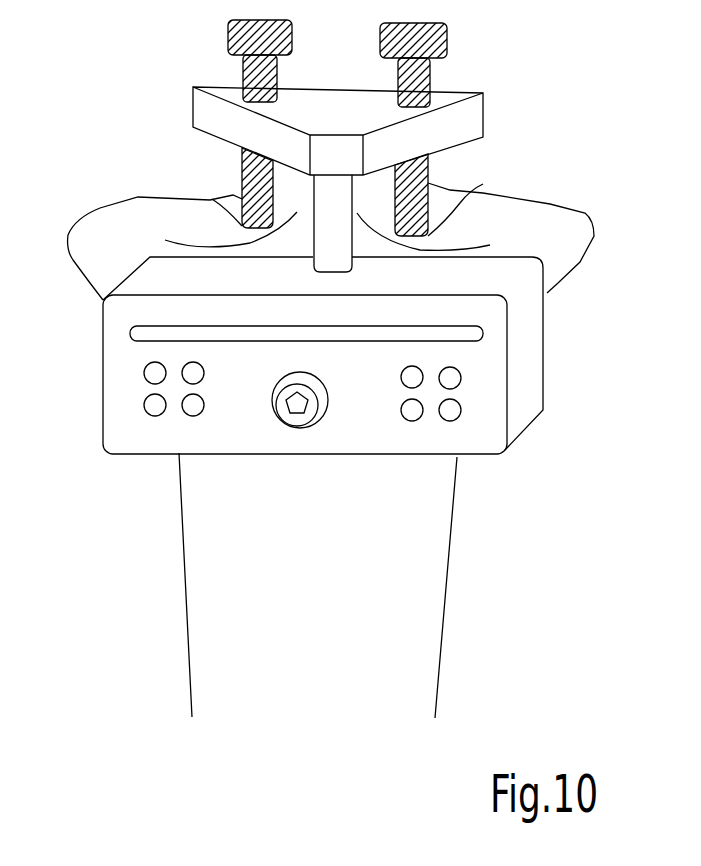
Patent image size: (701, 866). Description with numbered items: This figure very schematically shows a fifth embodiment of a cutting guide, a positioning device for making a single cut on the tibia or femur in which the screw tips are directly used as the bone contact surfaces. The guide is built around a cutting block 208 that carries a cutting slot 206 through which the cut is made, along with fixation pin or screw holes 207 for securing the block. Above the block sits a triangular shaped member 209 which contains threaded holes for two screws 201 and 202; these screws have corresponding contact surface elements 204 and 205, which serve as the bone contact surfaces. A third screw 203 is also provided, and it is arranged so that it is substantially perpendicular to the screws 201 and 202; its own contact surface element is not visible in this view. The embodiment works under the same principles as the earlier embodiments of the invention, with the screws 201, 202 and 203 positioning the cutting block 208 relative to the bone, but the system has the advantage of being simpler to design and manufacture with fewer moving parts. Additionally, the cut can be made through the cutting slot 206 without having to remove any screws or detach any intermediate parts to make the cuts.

The screw 201 is at (243, 66).
The screw 202 is at (430, 70).
The triangular shaped member 209 is at (478, 113).
The contact surface element 204 is at (213, 200).
The contact surface element 205 is at (483, 184).
The cutting slot 206 is at (130, 331).
The fixation pin or screw holes 207 is at (147, 405).
The cutting block 208 is at (535, 375).
The third screw 203 is at (283, 410).